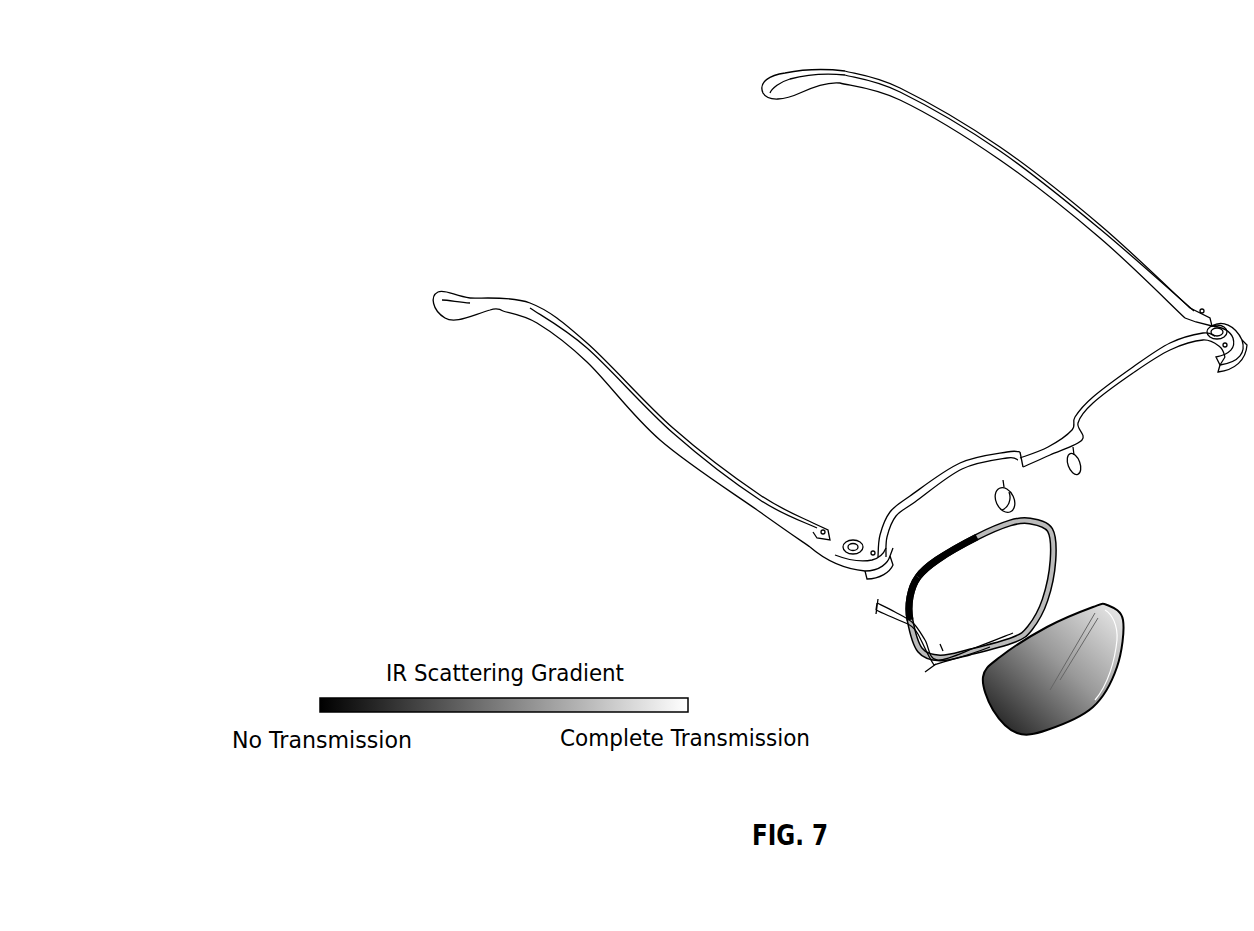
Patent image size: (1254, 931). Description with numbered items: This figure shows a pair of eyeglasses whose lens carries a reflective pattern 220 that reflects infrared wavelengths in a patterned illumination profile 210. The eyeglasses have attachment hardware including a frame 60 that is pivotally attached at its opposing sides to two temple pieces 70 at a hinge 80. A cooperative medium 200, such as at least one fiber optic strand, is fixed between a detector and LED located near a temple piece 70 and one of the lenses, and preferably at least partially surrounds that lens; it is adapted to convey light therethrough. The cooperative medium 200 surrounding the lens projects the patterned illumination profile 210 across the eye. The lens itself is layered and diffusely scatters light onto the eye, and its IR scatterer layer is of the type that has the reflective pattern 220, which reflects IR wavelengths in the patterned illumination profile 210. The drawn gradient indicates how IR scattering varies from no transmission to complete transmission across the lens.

The frame 60 is at (1120, 377).
The temple pieces 70 is at (1180, 284).
The hinge 80 is at (853, 540).
The cooperative medium 200 is at (1058, 538).
The patterned illumination profile 210 is at (940, 644).
The reflective pattern 220 is at (1013, 730).